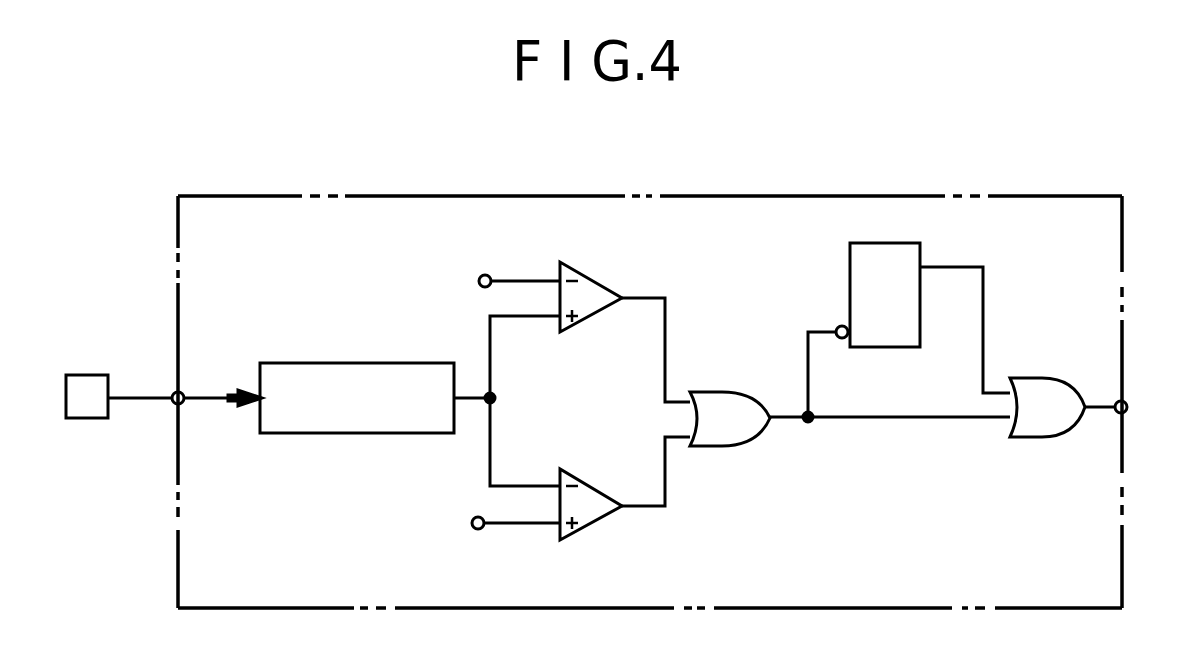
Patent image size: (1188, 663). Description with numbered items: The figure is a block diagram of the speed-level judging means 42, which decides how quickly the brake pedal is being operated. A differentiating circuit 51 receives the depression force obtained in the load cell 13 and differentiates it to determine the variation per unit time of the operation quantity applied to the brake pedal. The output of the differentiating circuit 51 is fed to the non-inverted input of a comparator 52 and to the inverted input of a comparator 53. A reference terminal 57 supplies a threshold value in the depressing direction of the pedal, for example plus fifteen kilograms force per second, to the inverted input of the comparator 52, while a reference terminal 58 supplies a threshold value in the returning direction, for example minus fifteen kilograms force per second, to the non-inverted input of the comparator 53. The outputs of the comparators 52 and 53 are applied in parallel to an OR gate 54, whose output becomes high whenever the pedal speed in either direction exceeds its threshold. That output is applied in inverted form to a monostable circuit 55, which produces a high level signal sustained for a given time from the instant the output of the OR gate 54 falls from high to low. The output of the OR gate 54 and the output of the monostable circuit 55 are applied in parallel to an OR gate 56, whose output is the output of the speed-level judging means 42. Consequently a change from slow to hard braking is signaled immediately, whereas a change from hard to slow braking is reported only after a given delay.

The load cell 13 is at (84, 375).
The speed-level judging means 42 is at (707, 193).
The differentiating circuit 51 is at (343, 363).
The comparator 52 is at (600, 293).
The comparator 53 is at (600, 512).
The OR gate 54 is at (743, 425).
The monostable circuit 55 is at (858, 253).
The OR gate 56 is at (1034, 422).
The reference terminal 57 is at (479, 276).
The reference terminal 58 is at (478, 529).